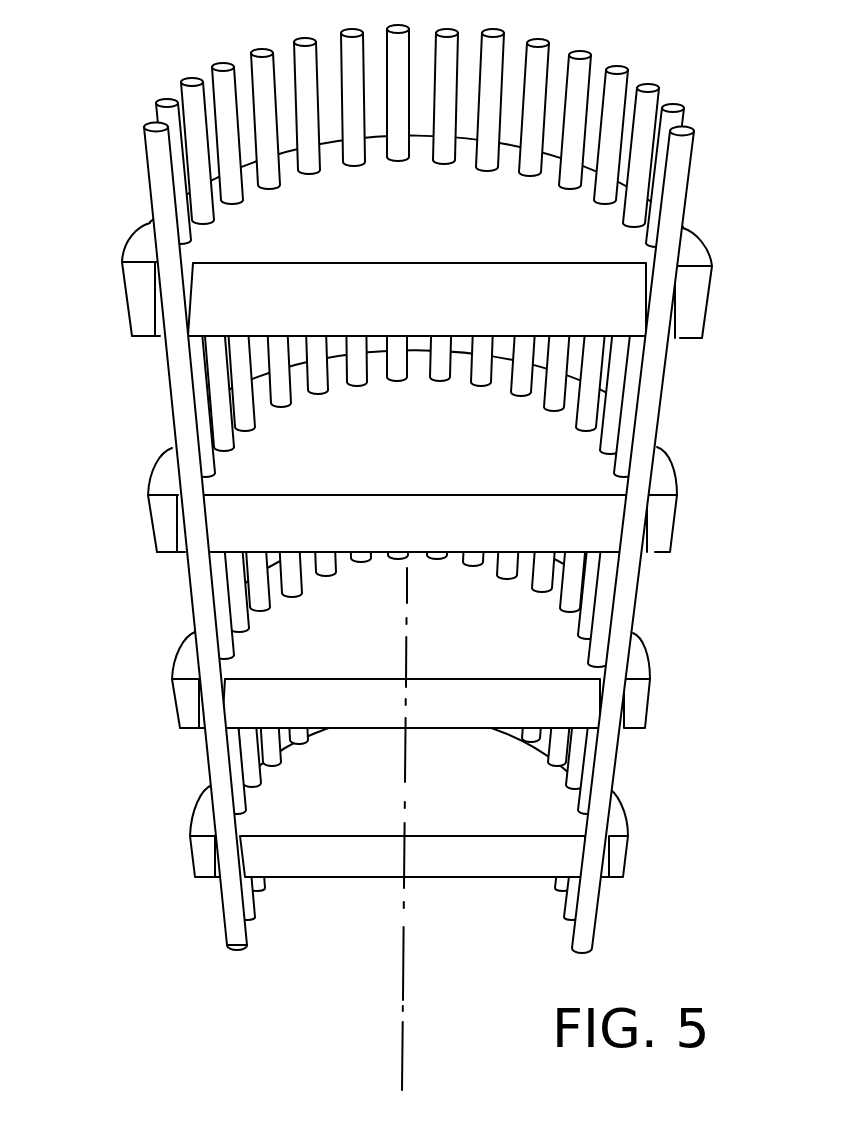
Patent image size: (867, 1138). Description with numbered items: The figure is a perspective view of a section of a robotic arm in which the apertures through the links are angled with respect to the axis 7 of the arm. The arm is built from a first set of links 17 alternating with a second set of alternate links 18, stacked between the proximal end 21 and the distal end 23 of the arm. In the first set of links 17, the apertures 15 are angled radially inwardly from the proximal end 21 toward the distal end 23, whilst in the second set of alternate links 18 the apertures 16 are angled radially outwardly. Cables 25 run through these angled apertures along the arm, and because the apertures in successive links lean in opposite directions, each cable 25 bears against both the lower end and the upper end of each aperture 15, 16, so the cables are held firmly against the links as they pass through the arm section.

The central axis 7 is at (402, 1004).
The aperture 15 is at (150, 313).
The aperture 16 is at (174, 509).
The first set of links 17 is at (452, 319).
The second set of alternate links 18 is at (436, 541).
The proximal end 21 is at (190, 972).
The distal end 23 is at (714, 102).
The cable 25 is at (160, 106).